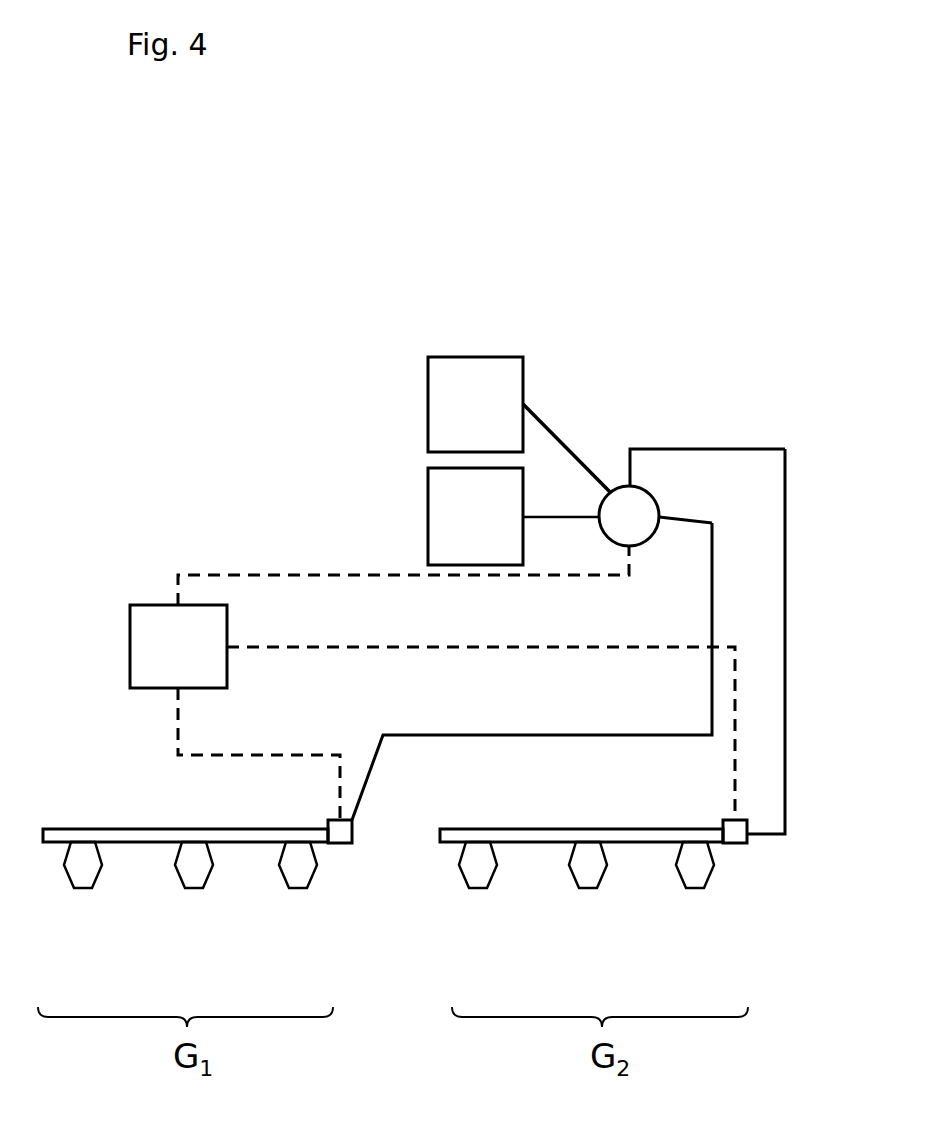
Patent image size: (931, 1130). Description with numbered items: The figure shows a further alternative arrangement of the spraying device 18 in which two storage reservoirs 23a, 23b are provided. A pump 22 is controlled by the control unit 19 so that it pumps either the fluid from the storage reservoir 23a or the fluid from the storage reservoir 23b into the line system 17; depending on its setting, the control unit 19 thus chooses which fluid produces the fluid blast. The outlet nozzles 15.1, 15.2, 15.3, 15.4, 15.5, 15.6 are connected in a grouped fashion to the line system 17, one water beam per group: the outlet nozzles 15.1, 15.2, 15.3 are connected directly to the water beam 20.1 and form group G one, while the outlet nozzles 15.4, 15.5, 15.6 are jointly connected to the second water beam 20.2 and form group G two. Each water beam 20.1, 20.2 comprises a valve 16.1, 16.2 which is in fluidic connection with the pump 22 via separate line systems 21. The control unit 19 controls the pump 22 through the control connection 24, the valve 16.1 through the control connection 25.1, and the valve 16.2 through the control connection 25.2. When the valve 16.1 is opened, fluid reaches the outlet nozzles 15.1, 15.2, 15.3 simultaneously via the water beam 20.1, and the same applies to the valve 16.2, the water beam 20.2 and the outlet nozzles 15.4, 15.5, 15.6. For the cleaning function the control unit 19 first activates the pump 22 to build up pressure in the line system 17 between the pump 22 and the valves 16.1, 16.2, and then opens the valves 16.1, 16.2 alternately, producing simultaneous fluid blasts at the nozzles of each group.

The outlet nozzle 15.1 is at (88, 875).
The outlet nozzle 15.2 is at (193, 875).
The outlet nozzle 15.3 is at (298, 875).
The outlet nozzle 15.4 is at (477, 875).
The outlet nozzle 15.5 is at (590, 877).
The outlet nozzle 15.6 is at (695, 877).
The valve 16.1 is at (342, 830).
The valve 16.2 is at (740, 838).
The line system 17 is at (770, 449).
The spraying device 18 is at (527, 257).
The control unit 19 is at (145, 617).
The water beam 20.1 is at (75, 832).
The second water beam 20.2 is at (710, 834).
The line system 21 is at (713, 449).
The pump 22 is at (630, 523).
The storage reservoir 23a is at (427, 390).
The storage reservoir 23b is at (441, 523).
The control connection 24 is at (228, 575).
The control connection 25.1 is at (177, 722).
The control connection 25.2 is at (410, 647).